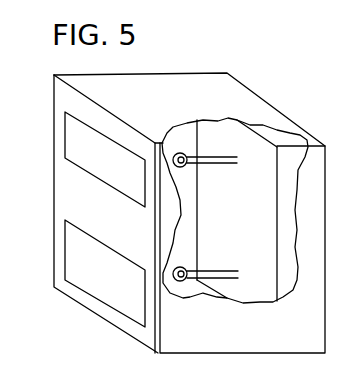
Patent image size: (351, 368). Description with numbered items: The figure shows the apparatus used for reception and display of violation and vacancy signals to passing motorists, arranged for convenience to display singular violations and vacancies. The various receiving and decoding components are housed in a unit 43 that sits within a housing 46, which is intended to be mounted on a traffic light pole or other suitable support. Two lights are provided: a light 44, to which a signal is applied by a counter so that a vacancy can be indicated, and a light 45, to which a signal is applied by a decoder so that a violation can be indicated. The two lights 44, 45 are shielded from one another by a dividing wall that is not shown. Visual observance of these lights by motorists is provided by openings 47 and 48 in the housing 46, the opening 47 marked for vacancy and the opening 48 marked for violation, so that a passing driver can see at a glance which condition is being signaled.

The housing for components 43 is at (259, 212).
The light 44 is at (205, 174).
The light 45 is at (204, 255).
The housing 46 is at (163, 73).
The opening 47 is at (82, 150).
The opening 48 is at (80, 257).